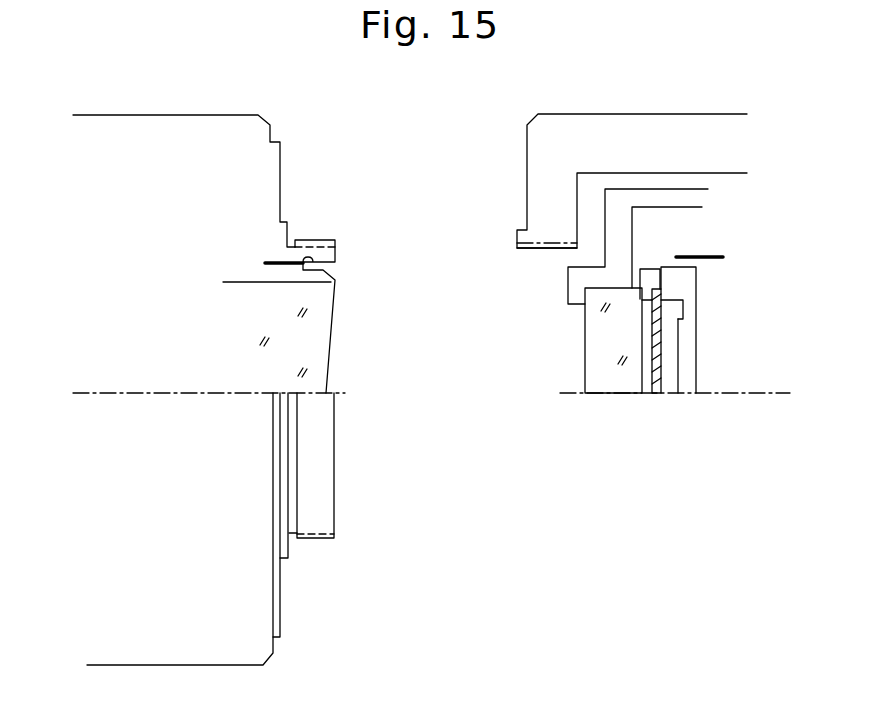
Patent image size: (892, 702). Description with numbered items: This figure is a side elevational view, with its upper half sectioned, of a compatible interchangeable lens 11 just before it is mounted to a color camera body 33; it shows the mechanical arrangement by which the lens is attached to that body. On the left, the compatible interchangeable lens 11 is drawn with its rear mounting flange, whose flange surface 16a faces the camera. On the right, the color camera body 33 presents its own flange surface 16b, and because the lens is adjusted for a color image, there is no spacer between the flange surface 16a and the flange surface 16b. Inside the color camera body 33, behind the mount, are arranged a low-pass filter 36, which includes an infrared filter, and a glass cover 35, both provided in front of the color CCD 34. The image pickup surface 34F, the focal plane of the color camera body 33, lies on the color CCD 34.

The compatible interchangeable lens 11 is at (240, 134).
The flange surface of the compatible interchangeable lens 16a is at (290, 233).
The flange surface of the color camera body 16b is at (517, 247).
The color camera body 33 is at (670, 126).
The color CCD 34 is at (690, 376).
The image pickup surface 34F is at (678, 393).
The glass cover 35 is at (658, 330).
The low-pass filter 36 is at (596, 330).